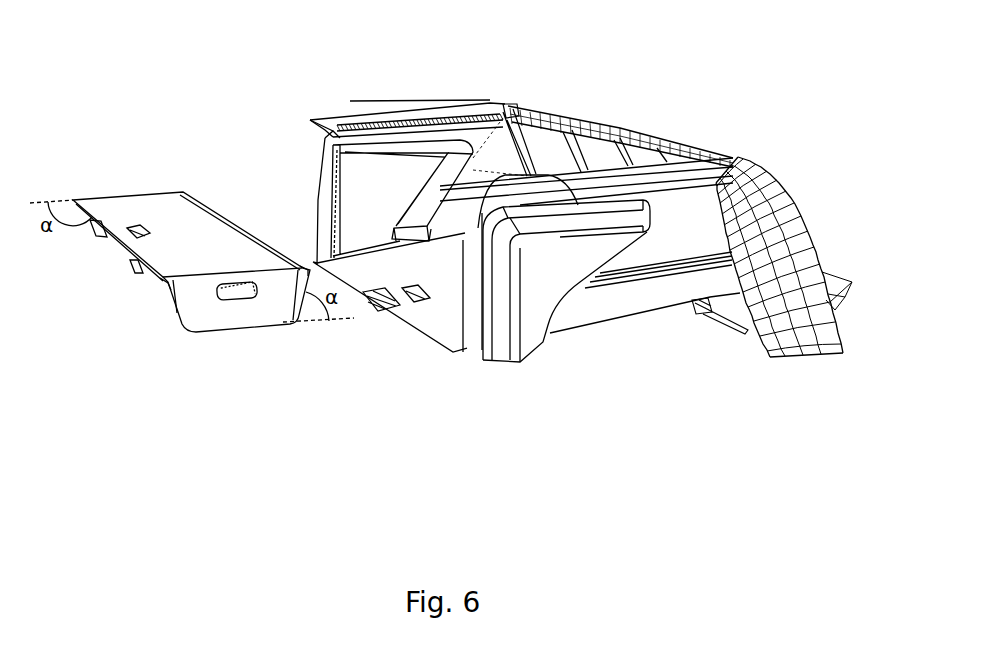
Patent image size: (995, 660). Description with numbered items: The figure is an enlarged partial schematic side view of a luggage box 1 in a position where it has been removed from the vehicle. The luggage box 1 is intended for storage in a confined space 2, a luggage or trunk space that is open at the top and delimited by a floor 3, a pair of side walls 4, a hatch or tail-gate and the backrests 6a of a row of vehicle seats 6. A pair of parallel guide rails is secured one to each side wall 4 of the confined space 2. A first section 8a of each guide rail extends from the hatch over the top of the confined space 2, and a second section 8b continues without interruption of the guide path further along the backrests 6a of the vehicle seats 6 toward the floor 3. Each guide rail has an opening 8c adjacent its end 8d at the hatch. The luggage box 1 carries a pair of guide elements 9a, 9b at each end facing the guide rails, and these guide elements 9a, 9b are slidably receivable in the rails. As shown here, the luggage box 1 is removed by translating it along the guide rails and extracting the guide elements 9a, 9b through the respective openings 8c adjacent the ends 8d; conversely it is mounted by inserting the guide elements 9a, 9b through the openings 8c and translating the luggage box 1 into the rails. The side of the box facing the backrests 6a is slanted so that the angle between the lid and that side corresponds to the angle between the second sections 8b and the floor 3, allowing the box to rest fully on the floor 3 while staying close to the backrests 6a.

The luggage box 1 is at (196, 249).
The confined space 2 is at (452, 281).
The floor 3 is at (397, 313).
The side walls 4 is at (500, 169).
The vehicle seats 6 is at (658, 114).
The backrests 6a is at (607, 130).
The first section 8a is at (432, 103).
The second section 8b is at (527, 146).
The opening 8c is at (335, 122).
The ends 8d is at (333, 135).
The guide element 9a is at (163, 280).
The guide element 9b is at (303, 268).